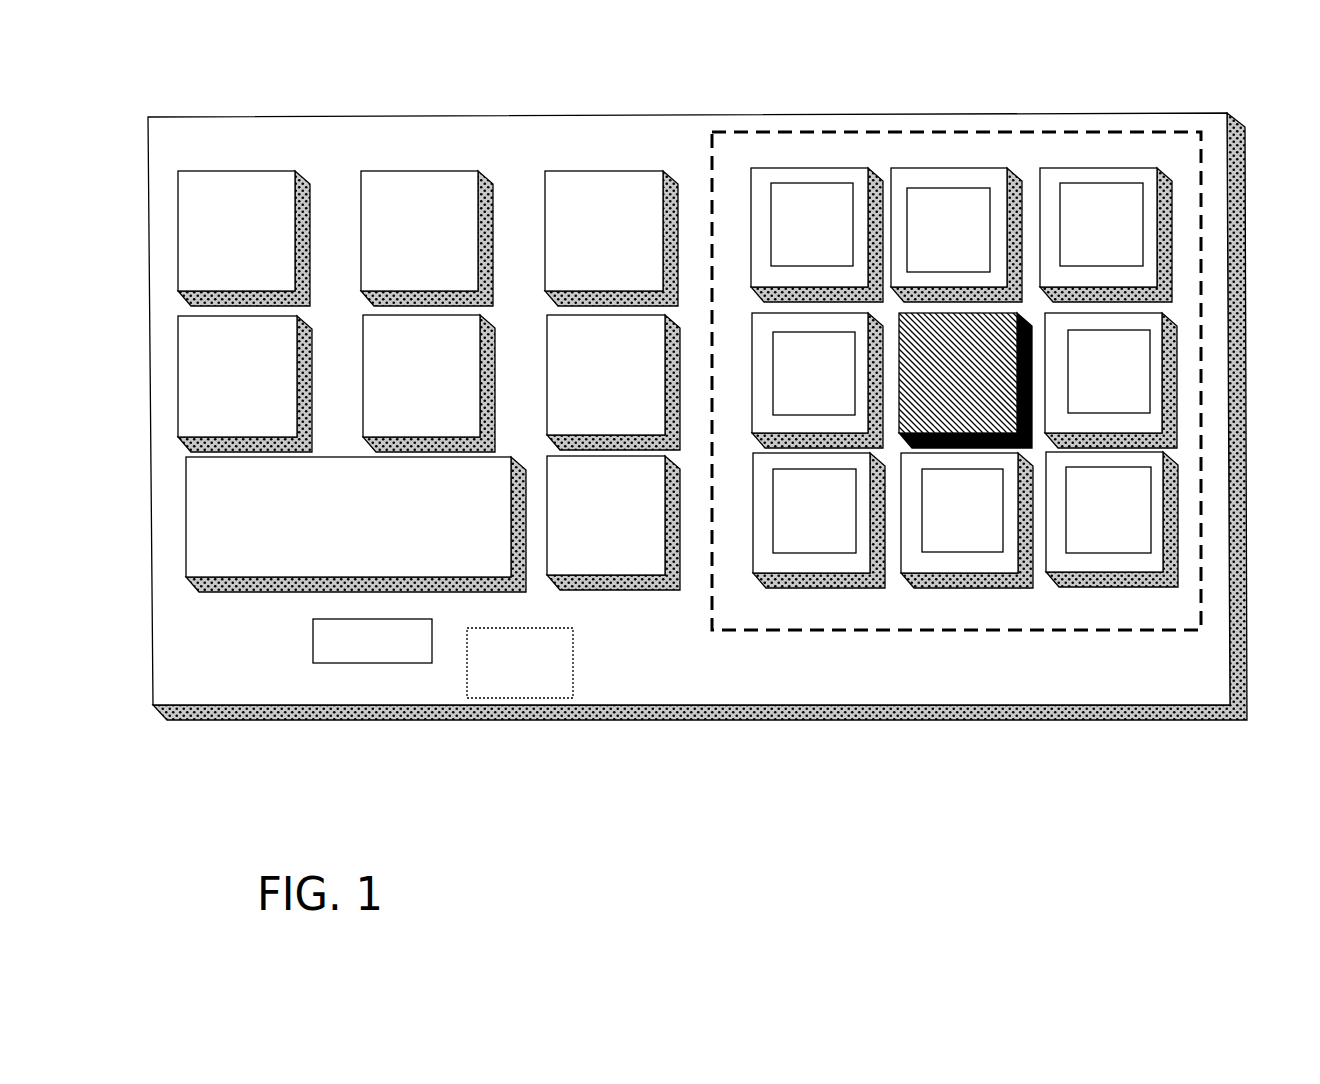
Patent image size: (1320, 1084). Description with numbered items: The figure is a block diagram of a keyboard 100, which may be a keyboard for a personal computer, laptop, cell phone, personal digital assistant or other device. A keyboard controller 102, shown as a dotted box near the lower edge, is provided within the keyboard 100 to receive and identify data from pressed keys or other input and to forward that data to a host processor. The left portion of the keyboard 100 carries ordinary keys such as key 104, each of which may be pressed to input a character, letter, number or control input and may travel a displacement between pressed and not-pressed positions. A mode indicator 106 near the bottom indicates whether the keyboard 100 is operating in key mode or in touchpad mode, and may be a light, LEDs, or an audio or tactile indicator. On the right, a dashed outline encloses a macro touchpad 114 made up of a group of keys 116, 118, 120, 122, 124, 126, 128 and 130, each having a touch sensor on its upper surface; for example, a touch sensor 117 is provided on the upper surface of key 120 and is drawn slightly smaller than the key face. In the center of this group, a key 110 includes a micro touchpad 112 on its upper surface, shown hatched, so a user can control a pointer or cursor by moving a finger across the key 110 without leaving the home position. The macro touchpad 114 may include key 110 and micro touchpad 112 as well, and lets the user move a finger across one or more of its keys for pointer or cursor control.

The keyboard 100 is at (240, 702).
The keyboard controller 102 is at (520, 698).
The key 104 is at (220, 180).
The mode indicator 106 is at (387, 665).
The key 110 is at (1007, 441).
The micro touchpad 112 is at (956, 616).
The macro touchpad 114 is at (822, 634).
The key 116 is at (775, 563).
The touch sensor 117 is at (1109, 509).
The key 118 is at (1012, 588).
The key 120 is at (1139, 694).
The key 122 is at (757, 362).
The key 124 is at (1157, 358).
The key 126 is at (757, 183).
The key 128 is at (903, 183).
The key 130 is at (1043, 183).